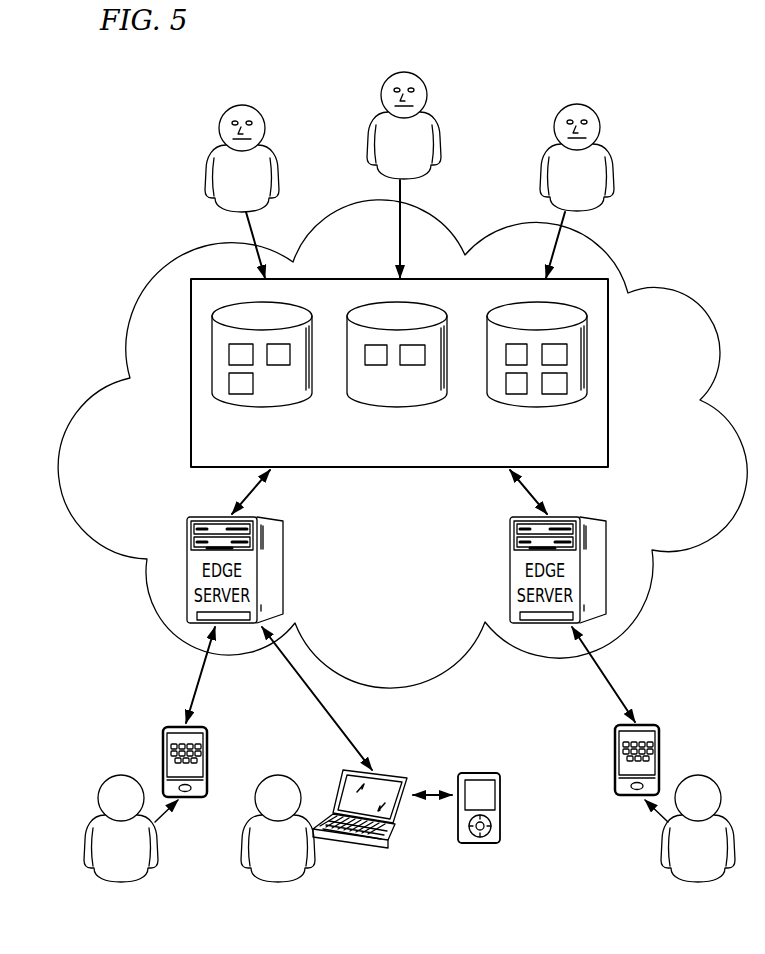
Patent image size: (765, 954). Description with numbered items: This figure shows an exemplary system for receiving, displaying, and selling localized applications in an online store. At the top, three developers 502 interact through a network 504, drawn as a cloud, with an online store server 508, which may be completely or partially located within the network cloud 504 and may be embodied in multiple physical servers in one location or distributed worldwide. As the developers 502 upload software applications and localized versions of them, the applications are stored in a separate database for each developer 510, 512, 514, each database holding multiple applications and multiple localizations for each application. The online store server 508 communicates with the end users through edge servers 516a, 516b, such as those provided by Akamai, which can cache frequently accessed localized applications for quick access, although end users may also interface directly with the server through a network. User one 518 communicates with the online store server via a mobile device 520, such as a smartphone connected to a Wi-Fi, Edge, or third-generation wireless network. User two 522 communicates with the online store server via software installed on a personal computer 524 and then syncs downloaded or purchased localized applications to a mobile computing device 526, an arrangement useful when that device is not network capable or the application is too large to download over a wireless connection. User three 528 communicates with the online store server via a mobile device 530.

The developers 502 is at (243, 103).
The network 504 is at (93, 388).
The online store server 508 is at (612, 356).
The database for developer D1 510 is at (253, 409).
The database for developer D2 512 is at (392, 409).
The database for developer D3 514 is at (534, 409).
The edge server 516a is at (280, 568).
The edge server 516b is at (508, 563).
The user 1 518 is at (117, 878).
The mobile device 520 is at (165, 736).
The user 2 522 is at (269, 878).
The personal computer 524 is at (394, 769).
The mobile computing device 526 is at (481, 771).
The user 3 528 is at (704, 878).
The mobile device 530 is at (661, 738).